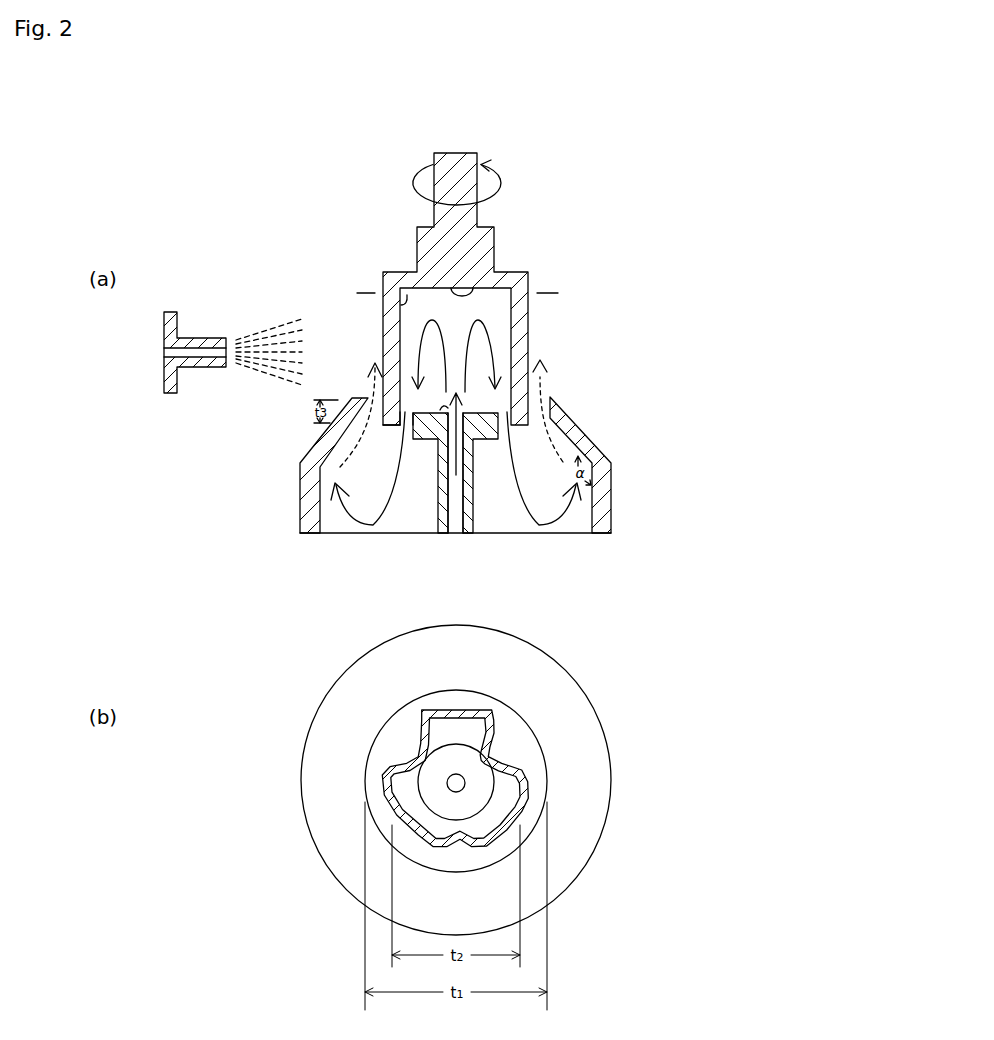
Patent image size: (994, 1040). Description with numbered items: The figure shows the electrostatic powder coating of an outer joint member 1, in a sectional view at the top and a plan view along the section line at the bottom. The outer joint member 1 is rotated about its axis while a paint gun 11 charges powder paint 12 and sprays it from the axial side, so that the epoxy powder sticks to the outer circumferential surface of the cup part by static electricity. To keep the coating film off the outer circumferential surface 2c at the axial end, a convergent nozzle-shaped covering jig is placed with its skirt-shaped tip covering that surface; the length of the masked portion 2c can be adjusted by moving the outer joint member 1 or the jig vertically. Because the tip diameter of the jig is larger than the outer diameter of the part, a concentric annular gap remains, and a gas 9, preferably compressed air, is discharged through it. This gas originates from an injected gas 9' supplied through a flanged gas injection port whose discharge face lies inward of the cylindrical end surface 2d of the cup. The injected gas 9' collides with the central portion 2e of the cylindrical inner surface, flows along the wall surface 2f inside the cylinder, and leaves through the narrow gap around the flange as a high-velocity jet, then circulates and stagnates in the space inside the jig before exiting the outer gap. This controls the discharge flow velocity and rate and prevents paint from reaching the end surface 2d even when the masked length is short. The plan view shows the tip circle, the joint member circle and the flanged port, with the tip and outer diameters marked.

The outer joint member 1 is at (390, 180).
The outer circumferential surface at the axial end 2c is at (378, 410).
The cylindrical end surface 2d is at (393, 425).
The central portion of the cylindrical inner surface 2e is at (462, 290).
The wall surface inside the cylinder 2f is at (407, 295).
The gas 9 is at (461, 389).
The injected gas 9' is at (456, 451).
The paint gun 11 is at (198, 340).
The powder paint 12 is at (270, 340).